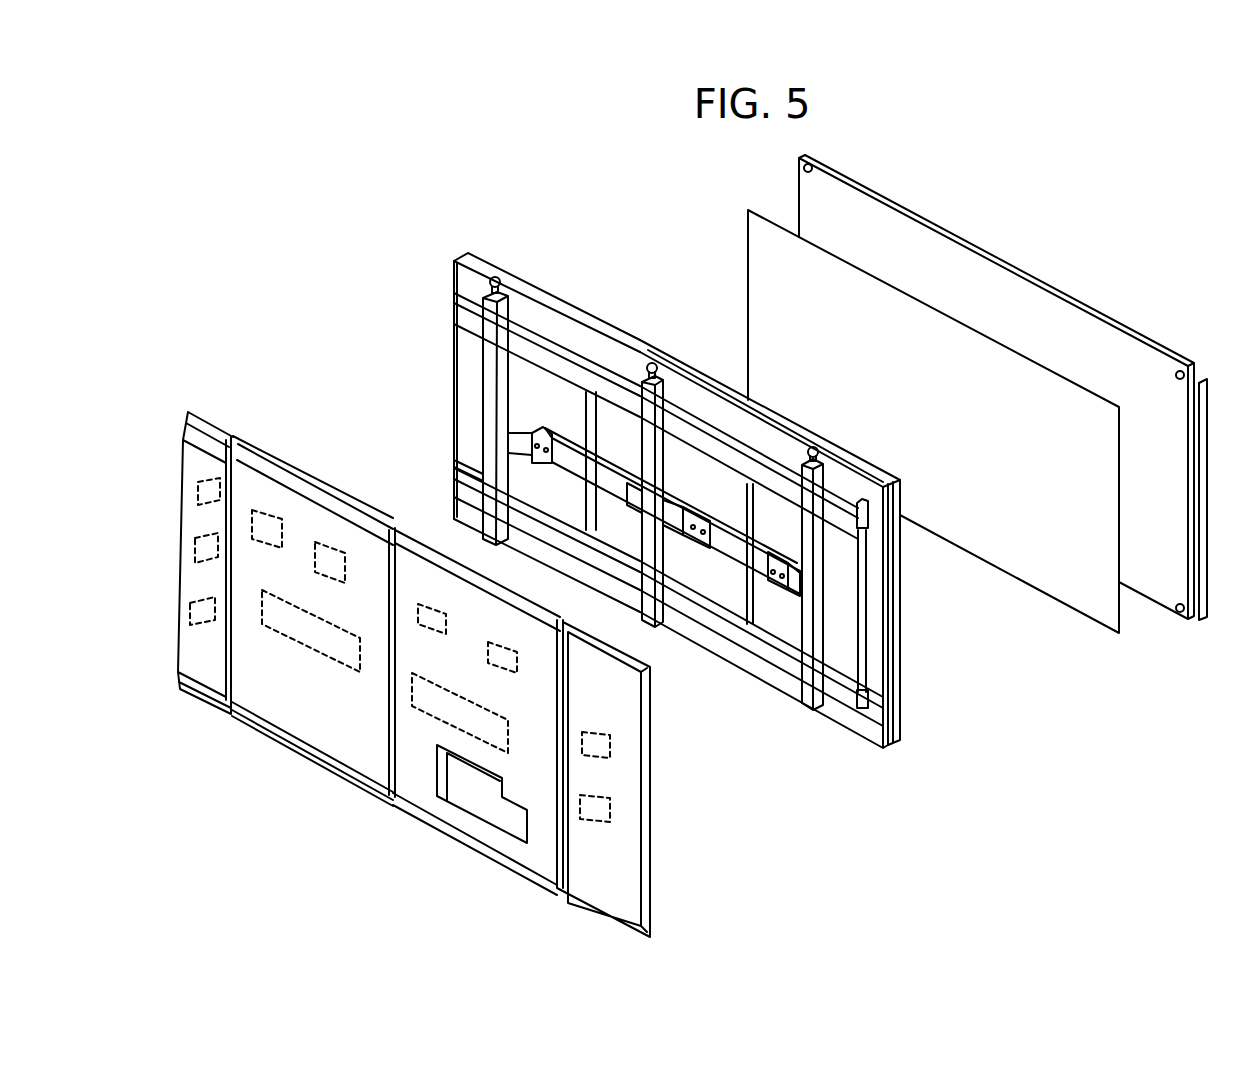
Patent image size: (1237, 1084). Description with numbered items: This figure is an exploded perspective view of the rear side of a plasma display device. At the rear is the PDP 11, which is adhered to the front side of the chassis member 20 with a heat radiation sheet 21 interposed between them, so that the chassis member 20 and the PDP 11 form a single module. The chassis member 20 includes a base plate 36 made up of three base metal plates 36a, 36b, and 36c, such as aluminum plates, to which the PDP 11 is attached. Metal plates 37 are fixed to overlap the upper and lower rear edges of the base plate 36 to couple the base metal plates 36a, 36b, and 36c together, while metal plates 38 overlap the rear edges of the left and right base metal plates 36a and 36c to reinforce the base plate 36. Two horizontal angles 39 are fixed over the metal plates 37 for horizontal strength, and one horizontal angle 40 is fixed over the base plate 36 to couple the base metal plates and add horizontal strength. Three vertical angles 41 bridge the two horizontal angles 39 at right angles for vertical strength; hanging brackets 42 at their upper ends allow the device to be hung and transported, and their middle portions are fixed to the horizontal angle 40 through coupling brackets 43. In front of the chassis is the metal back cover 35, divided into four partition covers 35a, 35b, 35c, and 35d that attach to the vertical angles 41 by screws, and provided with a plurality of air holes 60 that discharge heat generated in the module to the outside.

The PDP 11 is at (849, 199).
The heat radiation sheet 21 is at (760, 242).
The chassis member 20 is at (471, 243).
The base plate 36 is at (693, 518).
The base metal plate 36a is at (547, 292).
The base metal plate 36b is at (620, 330).
The base metal plate 36c is at (900, 545).
The metal plate 37 is at (460, 281).
The metal plate 38 is at (458, 383).
The horizontal angle 39 is at (460, 312).
The horizontal angle 40 is at (723, 545).
The vertical angle 41 is at (490, 412).
The hanging bracket 42 is at (498, 278).
The coupling bracket 43 is at (515, 446).
The back cover 35 is at (414, 674).
The partition cover 35a is at (202, 690).
The partition cover 35b is at (350, 762).
The partition cover 35c is at (472, 828).
The partition cover 35d is at (623, 868).
The air hole 60 is at (192, 602).